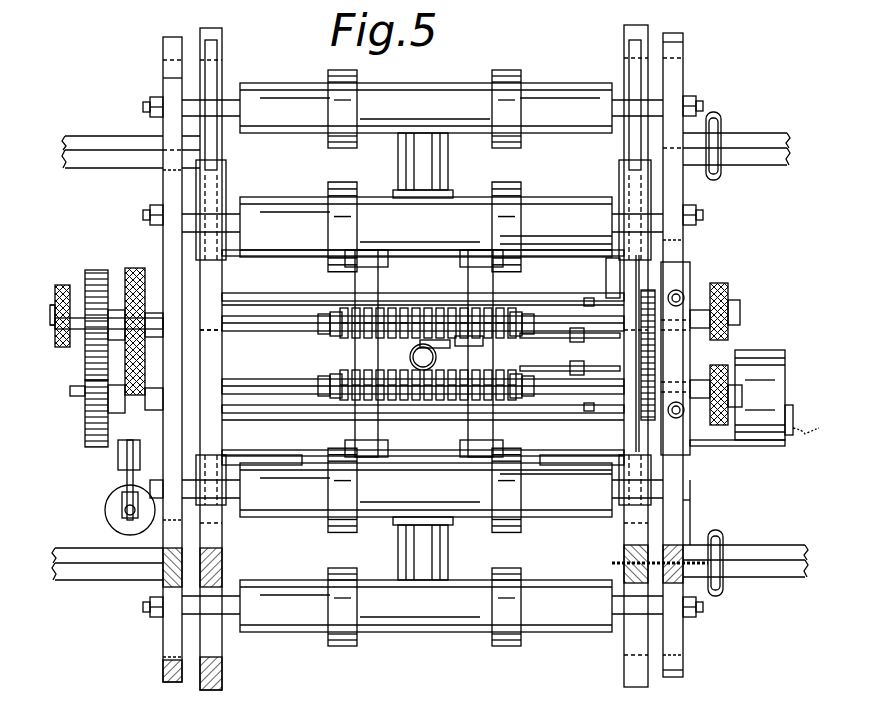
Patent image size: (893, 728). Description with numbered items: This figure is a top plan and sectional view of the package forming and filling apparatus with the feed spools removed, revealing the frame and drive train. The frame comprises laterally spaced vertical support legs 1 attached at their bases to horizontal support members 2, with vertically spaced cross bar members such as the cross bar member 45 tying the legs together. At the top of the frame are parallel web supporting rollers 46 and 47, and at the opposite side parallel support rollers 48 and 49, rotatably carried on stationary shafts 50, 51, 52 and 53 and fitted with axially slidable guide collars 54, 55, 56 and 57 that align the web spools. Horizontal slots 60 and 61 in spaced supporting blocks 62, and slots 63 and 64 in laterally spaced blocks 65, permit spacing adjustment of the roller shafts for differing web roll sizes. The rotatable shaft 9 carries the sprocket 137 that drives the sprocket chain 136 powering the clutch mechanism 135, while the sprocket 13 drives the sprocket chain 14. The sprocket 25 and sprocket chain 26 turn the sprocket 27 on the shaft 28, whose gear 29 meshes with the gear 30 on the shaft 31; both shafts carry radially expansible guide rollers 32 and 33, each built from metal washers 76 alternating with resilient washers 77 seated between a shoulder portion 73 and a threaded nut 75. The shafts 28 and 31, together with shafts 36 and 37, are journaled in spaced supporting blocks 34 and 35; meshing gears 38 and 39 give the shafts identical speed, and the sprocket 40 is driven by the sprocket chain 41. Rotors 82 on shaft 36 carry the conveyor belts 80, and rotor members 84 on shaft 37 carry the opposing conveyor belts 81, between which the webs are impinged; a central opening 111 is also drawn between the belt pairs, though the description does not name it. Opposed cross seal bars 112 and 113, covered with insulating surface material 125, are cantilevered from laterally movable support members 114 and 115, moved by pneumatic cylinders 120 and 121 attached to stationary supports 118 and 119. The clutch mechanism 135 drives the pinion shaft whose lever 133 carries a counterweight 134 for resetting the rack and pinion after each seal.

The vertical support legs 1 is at (93, 143).
The horizontal support members 2 is at (92, 166).
The rotatable shaft 9 is at (738, 398).
The sprocket 13 is at (73, 285).
The sprocket chain 14 is at (58, 285).
The sprocket 25 is at (132, 268).
The sprocket chain 26 is at (102, 268).
The sprocket 27 is at (116, 334).
The shaft 28 is at (252, 331).
The gear 29 is at (644, 290).
The gear 30 is at (636, 422).
The shaft 31 is at (296, 384).
The guide roller 32 is at (330, 330).
The guide roller 33 is at (342, 398).
The supporting block 34 is at (160, 371).
The supporting block 35 is at (690, 352).
The shaft 36 is at (249, 300).
The shaft 37 is at (250, 413).
The gear 38 is at (96, 268).
The gear 39 is at (92, 449).
The sprocket 40 is at (720, 285).
The sprocket chain 41 is at (723, 283).
The cross bar member 45 is at (173, 542).
The web supporting roller 46 is at (412, 113).
The web supporting roller 47 is at (422, 226).
The support roller 48 is at (429, 498).
The support roller 49 is at (429, 606).
The stationary shaft 50 is at (150, 105).
The stationary shaft 51 is at (154, 206).
The stationary shaft 52 is at (130, 456).
The stationary shaft 53 is at (145, 608).
The guide collar 54 is at (338, 70).
The guide collar 55 is at (332, 182).
The guide collar 56 is at (308, 455).
The guide collar 57 is at (351, 646).
The horizontal slot 60 is at (167, 61).
The horizontal slot 61 is at (166, 171).
The supporting block 62 is at (165, 78).
The slot 63 is at (172, 520).
The slot 64 is at (165, 658).
The block 65 is at (165, 680).
The shoulder portion 73 is at (415, 306).
The threaded nut 75 is at (335, 312).
The metal washer 76 is at (480, 310).
The resilient washer 77 is at (442, 306).
The conveyor belt 80 is at (354, 272).
The conveyor belt 81 is at (370, 446).
The rotor 82 is at (428, 355).
The rotor member 84 is at (470, 482).
The opening 111 is at (412, 357).
The cross seal bar 112 is at (570, 330).
The cross seal bar 113 is at (568, 378).
The support member 114 is at (574, 236).
The support member 115 is at (578, 474).
The stationary support 118 is at (604, 266).
The stationary support 119 is at (232, 498).
The pneumatic cylinder 120 is at (448, 170).
The pneumatic cylinder 121 is at (448, 530).
The insulating surface material 125 is at (576, 304).
The lever 133 is at (126, 484).
The counterweight 134 is at (106, 502).
The clutch mechanism 135 is at (780, 350).
The sprocket chain 136 is at (730, 408).
The sprocket 137 is at (720, 446).